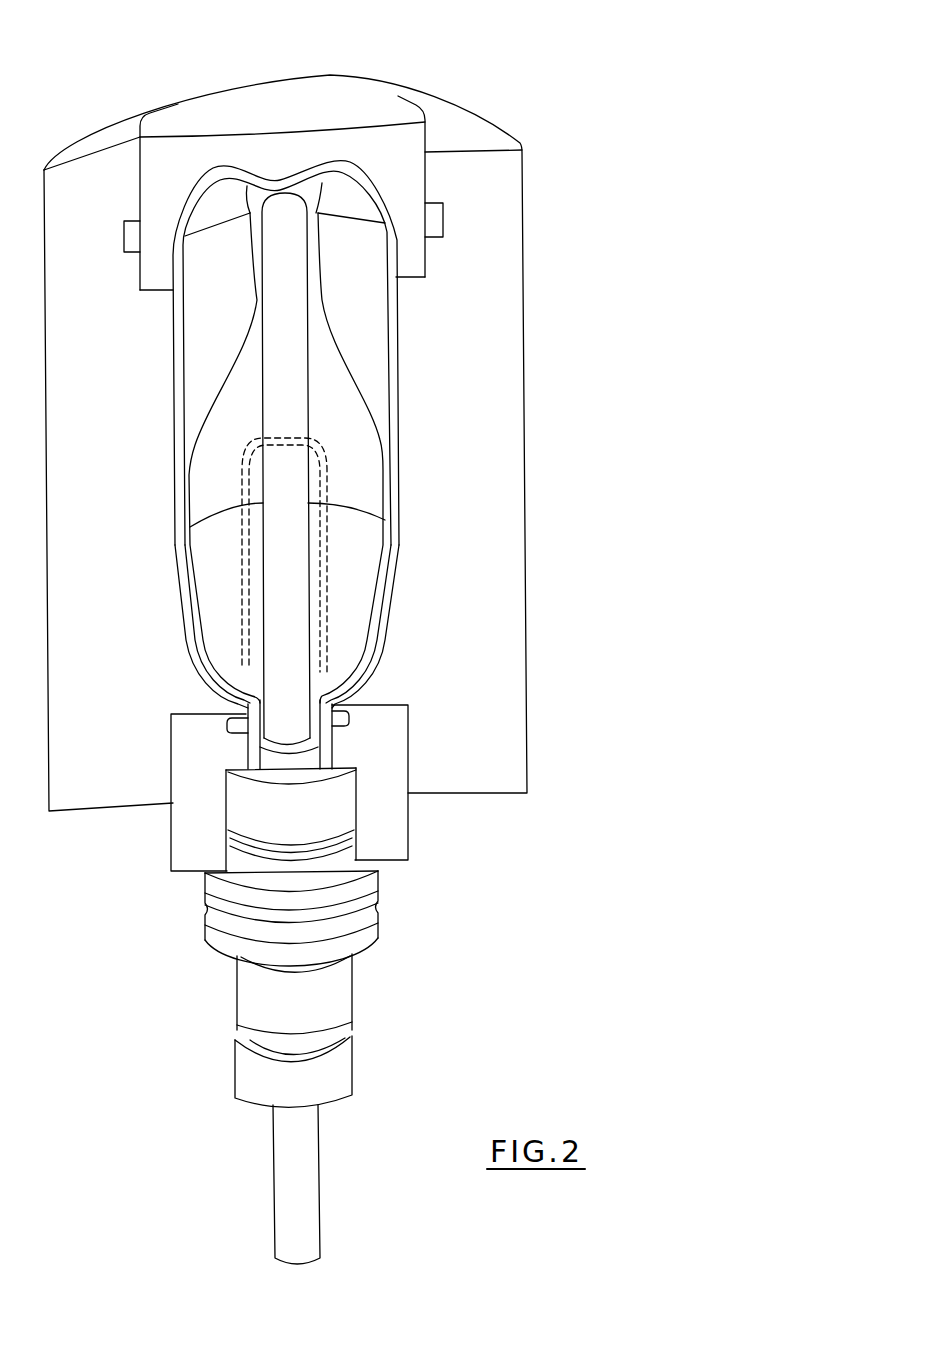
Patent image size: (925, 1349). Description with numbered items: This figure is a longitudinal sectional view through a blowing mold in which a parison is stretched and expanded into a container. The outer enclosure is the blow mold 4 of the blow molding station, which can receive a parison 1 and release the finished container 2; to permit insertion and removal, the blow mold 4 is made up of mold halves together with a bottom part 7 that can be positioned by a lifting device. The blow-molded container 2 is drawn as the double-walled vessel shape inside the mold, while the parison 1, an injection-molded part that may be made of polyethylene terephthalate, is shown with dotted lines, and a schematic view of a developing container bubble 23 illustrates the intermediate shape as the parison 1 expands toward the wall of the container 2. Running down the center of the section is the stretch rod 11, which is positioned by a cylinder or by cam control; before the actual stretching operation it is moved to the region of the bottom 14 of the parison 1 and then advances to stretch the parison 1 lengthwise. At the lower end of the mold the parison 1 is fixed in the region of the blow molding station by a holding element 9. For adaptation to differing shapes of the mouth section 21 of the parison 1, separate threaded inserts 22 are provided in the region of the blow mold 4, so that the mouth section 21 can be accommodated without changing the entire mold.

The parison 1 is at (332, 600).
The container 2 is at (397, 380).
The blow mold 4 is at (482, 443).
The bottom part 7 is at (366, 91).
The holding element 9 is at (368, 927).
The stretch rod 11 is at (273, 1200).
The bottom 14 is at (325, 441).
The mouth section 21 is at (332, 736).
The threaded inserts 22 is at (395, 823).
The container bubble 23 is at (335, 345).